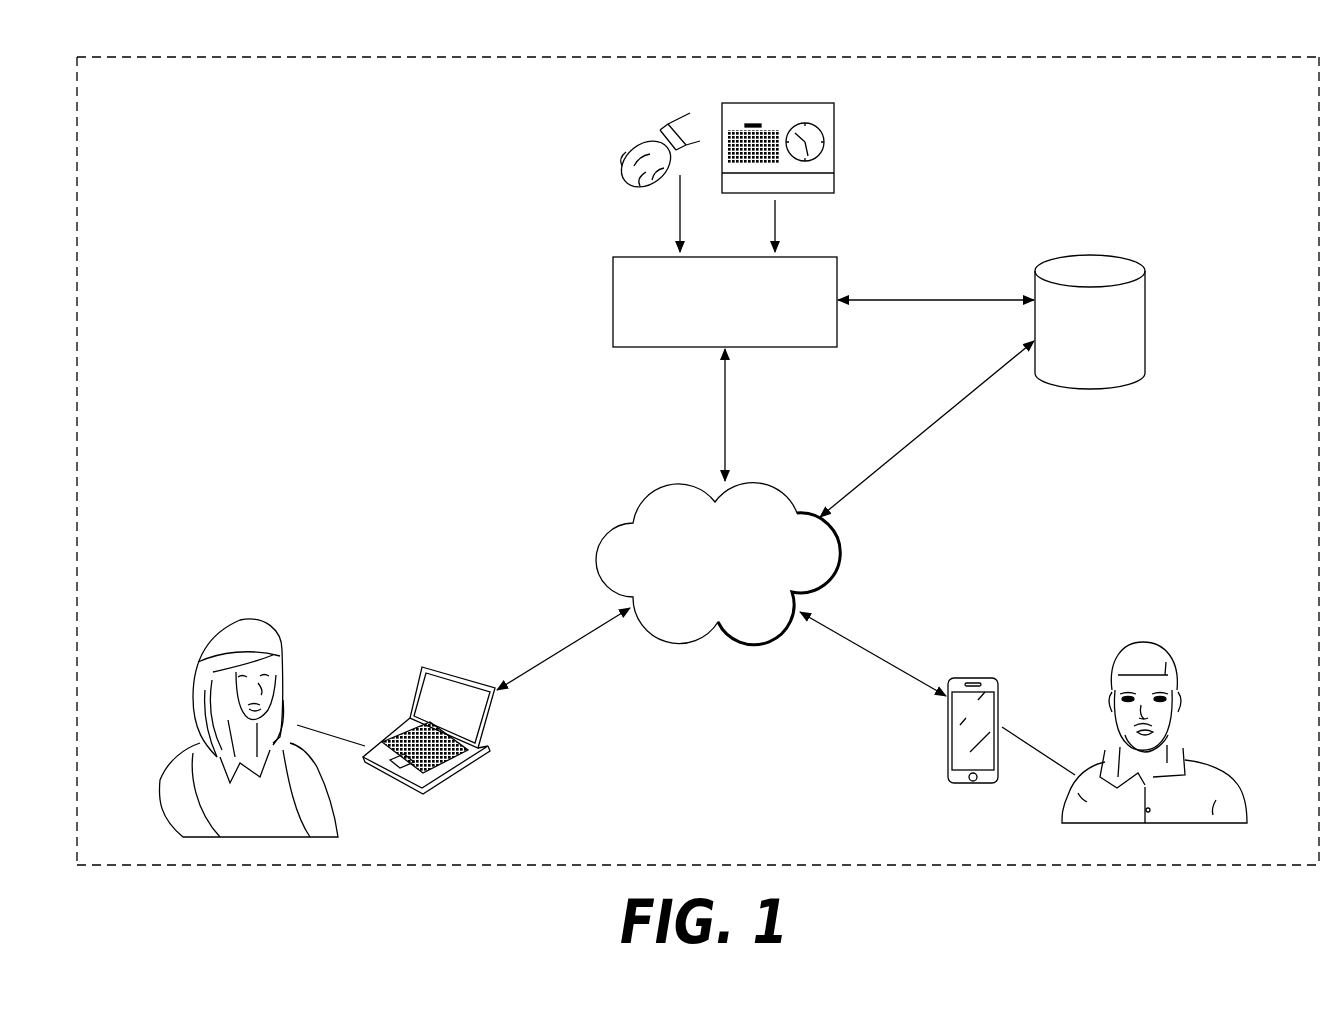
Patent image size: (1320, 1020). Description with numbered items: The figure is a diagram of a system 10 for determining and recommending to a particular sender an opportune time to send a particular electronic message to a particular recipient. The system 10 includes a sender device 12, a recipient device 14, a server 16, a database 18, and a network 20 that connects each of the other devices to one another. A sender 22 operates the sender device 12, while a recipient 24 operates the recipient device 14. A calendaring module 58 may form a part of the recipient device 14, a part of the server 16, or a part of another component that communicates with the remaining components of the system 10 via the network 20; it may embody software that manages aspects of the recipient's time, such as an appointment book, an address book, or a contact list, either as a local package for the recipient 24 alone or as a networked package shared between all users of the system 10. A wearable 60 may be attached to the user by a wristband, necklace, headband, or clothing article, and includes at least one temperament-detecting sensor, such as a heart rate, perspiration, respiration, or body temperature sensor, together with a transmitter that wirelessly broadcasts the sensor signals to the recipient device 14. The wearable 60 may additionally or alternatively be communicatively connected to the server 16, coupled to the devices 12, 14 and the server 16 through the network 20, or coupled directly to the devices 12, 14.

The system 10 is at (1148, 128).
The sender device 12 is at (462, 718).
The recipient device 14 is at (984, 740).
The server 16 is at (736, 327).
The database 18 is at (1102, 359).
The network 20 is at (731, 588).
The sender 22 is at (185, 697).
The recipient 24 is at (1224, 764).
The calendaring module 58 is at (834, 135).
The wearable 60 is at (664, 128).